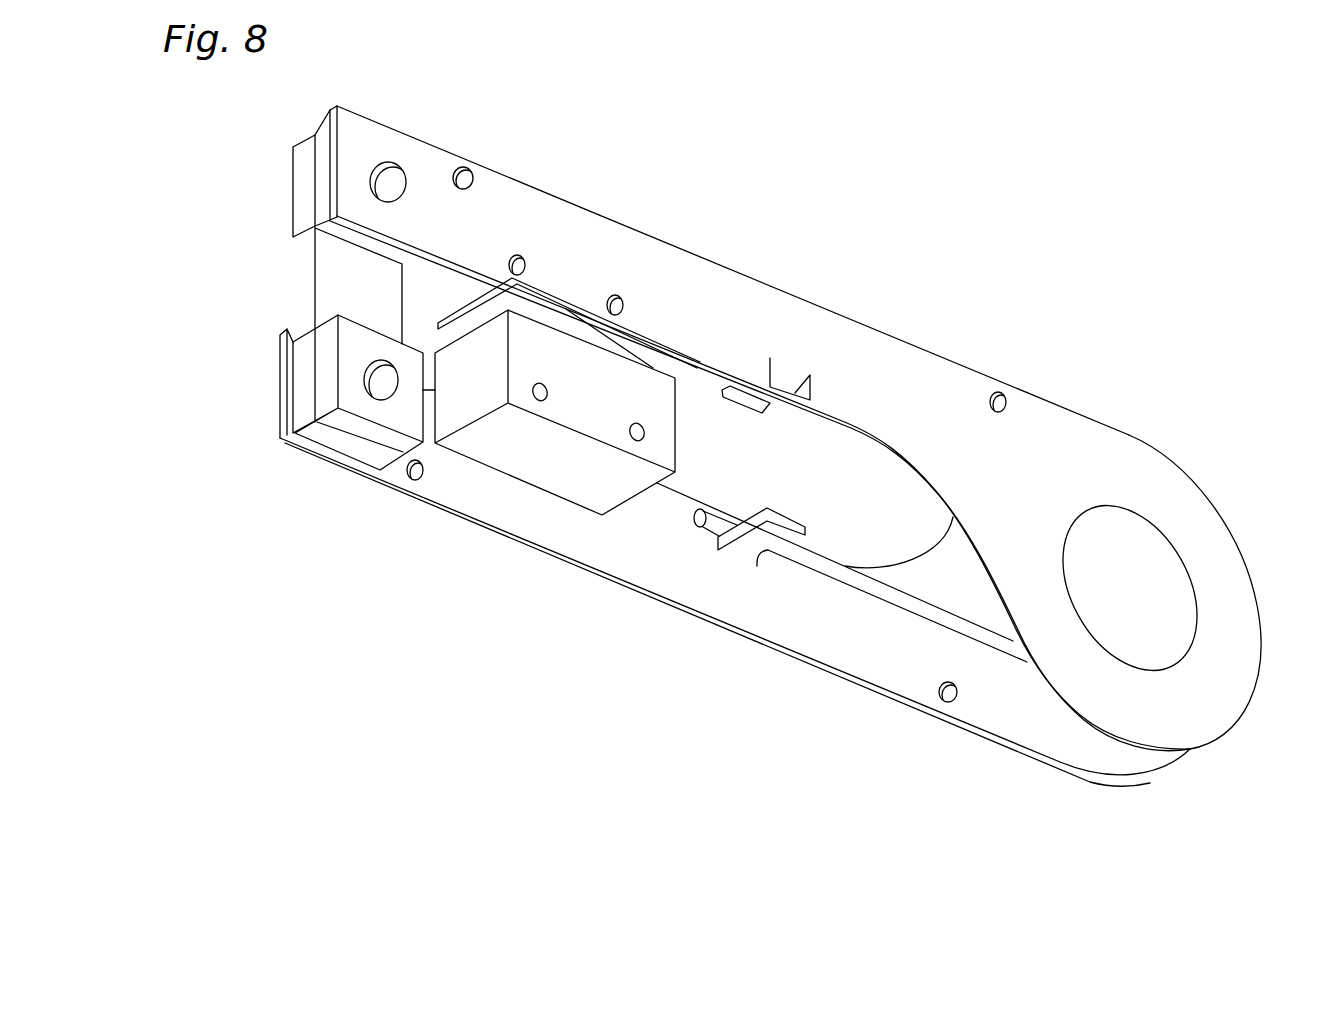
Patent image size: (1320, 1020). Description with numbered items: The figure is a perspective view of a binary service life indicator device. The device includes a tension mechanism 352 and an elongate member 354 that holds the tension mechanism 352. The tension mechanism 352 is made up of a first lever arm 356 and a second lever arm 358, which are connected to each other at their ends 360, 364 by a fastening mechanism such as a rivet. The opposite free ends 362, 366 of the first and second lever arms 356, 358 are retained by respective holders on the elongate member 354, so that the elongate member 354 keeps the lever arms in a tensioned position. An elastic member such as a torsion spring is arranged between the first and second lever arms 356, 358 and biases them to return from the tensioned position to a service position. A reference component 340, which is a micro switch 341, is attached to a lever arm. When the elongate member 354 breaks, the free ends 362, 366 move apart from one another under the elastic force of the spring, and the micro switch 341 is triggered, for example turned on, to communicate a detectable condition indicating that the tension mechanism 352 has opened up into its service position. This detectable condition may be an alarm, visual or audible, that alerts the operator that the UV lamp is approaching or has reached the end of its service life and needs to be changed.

The tension mechanism 352 is at (778, 518).
The first lever arm 356 is at (752, 278).
The second lever arm 358 is at (780, 650).
The end of first lever arm 360 is at (1185, 465).
The free end of first lever arm 362 is at (366, 116).
The end of second lever arm 364 is at (1133, 783).
The free end of second lever arm 366 is at (328, 465).
The elongate member 354 is at (314, 288).
The reference component 340 is at (539, 454).
The micro switch 341 is at (595, 470).